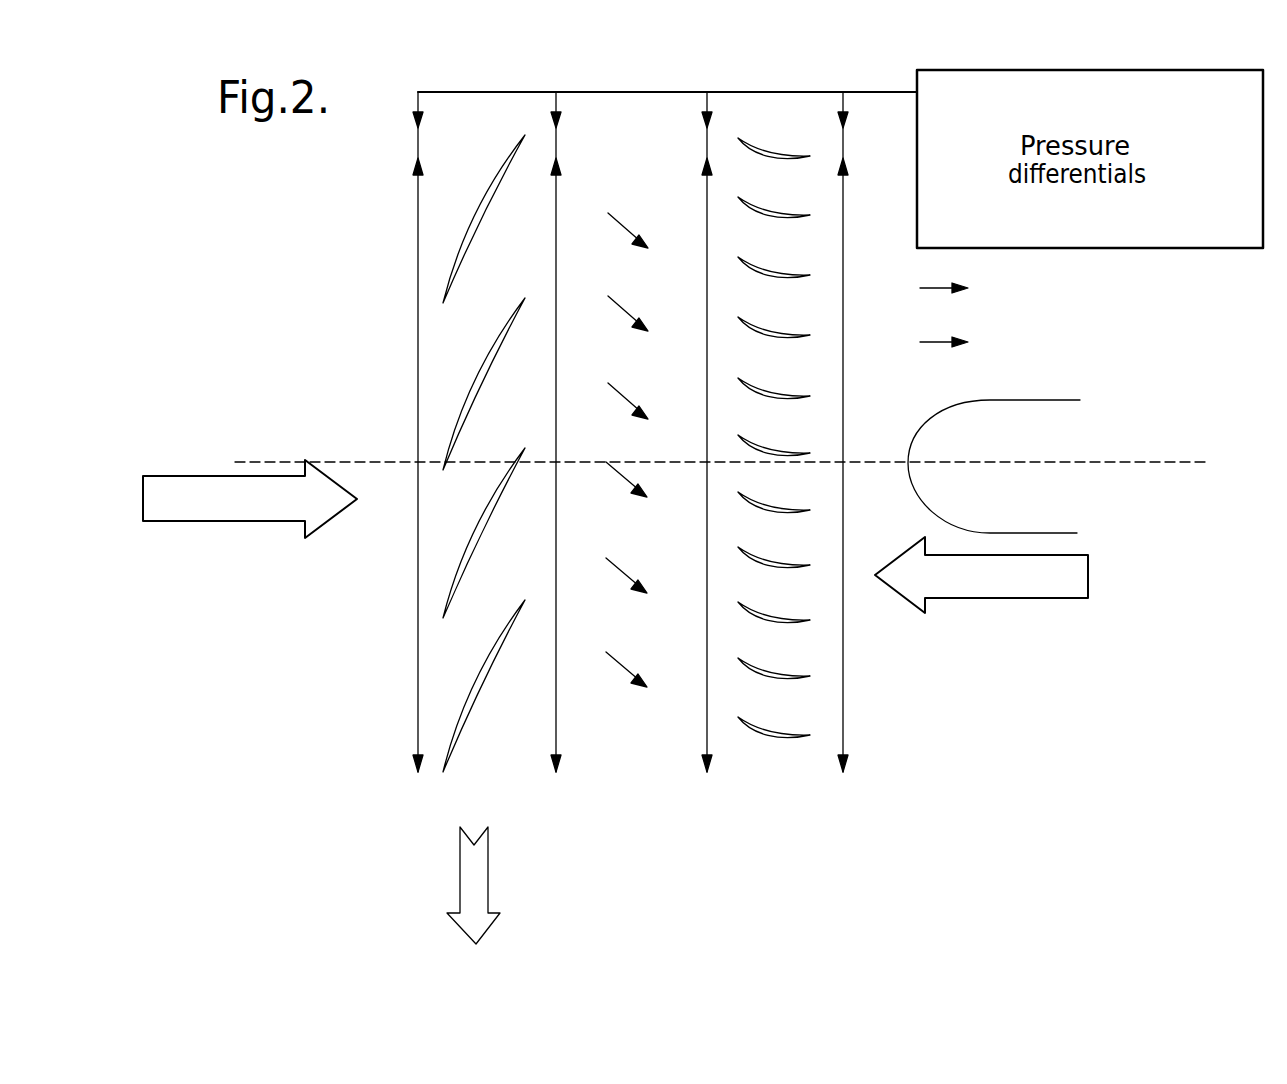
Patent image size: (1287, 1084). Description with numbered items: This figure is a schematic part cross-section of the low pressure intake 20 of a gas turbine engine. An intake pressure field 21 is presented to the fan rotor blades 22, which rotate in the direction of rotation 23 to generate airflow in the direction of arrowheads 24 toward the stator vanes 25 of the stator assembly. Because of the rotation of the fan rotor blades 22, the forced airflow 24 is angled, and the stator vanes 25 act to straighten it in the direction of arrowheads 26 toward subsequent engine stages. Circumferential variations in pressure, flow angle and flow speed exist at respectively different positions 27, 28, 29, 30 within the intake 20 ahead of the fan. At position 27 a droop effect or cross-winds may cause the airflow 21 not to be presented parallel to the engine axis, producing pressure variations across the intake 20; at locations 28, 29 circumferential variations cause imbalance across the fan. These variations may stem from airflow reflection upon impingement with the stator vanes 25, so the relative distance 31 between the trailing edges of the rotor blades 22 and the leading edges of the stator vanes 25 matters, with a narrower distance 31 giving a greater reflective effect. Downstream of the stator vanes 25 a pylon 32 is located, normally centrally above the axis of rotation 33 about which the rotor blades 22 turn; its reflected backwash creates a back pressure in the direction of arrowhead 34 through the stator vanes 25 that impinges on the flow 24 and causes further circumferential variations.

The low pressure intake 20 is at (228, 253).
The intake pressure field 21 is at (200, 482).
The fan rotor blades 22 is at (478, 230).
The direction of rotation 23 is at (467, 881).
The airflow arrowheads 24 is at (624, 223).
The stator vanes 25 is at (778, 155).
The straightened flow arrowheads 26 is at (962, 287).
The first position 27 is at (418, 104).
The second position 28 is at (556, 100).
The third position 29 is at (707, 100).
The fourth position 30 is at (843, 100).
The relative distance 31 is at (700, 76).
The pylon 32 is at (1058, 420).
The axis of rotation 33 is at (250, 460).
The back pressure arrowhead 34 is at (1088, 575).